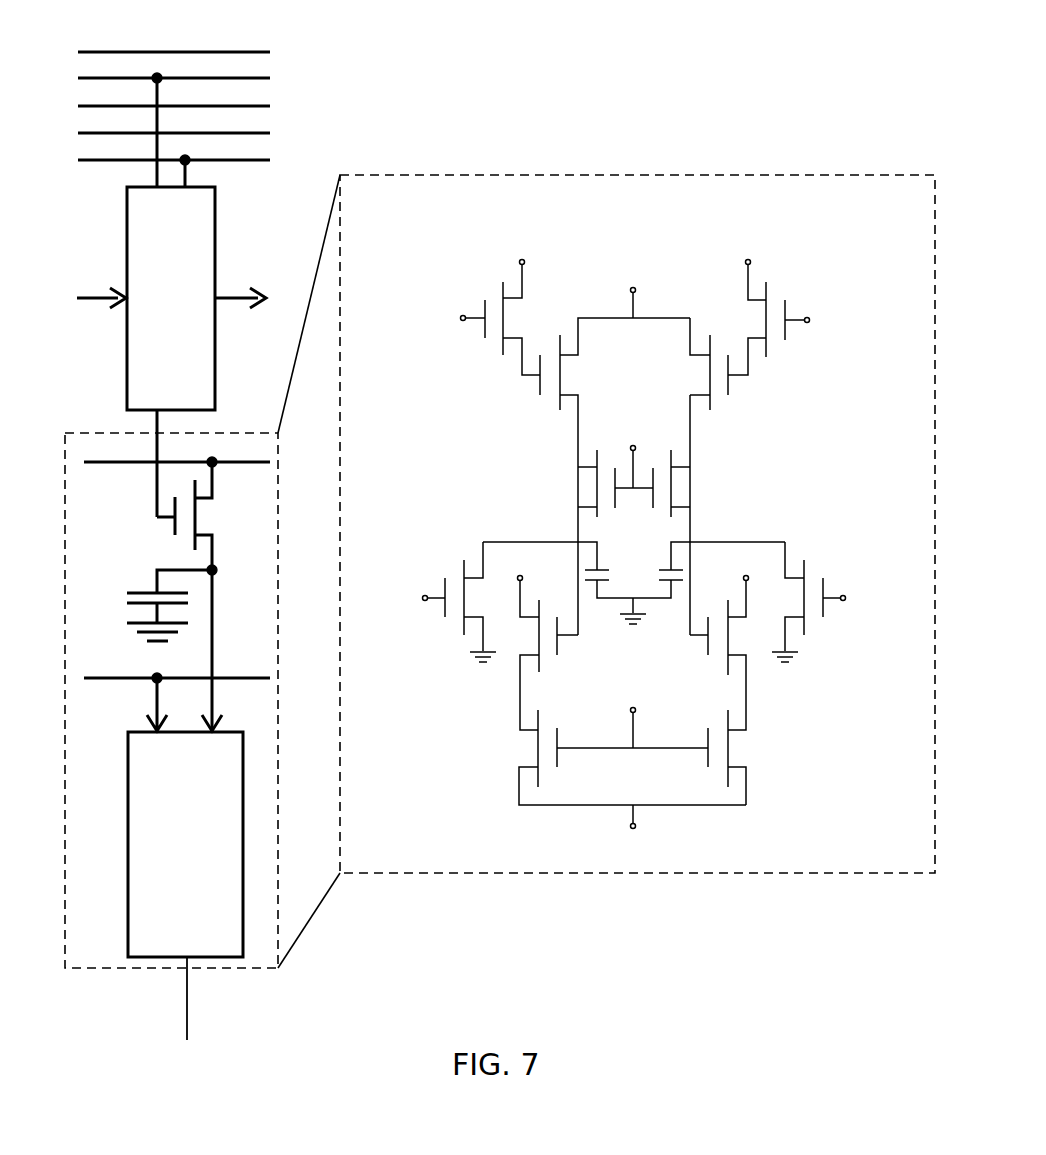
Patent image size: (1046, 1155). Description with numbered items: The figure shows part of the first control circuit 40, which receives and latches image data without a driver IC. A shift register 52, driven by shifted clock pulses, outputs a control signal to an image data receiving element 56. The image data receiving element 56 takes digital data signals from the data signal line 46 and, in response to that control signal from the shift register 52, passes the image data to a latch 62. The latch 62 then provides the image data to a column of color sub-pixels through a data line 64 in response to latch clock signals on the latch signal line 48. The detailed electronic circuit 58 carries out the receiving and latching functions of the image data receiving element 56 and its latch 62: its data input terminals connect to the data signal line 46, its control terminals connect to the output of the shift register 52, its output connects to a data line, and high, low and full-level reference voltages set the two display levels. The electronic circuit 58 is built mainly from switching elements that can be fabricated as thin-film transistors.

The first control circuit 40 is at (294, 130).
The shift register 52 is at (126, 258).
The data signal line 46 is at (131, 467).
The image data receiving element 56 is at (136, 534).
The latch signal line 48 is at (124, 693).
The latch 62 is at (127, 852).
The data line 64 is at (190, 1015).
The electronic circuit 58 is at (537, 175).